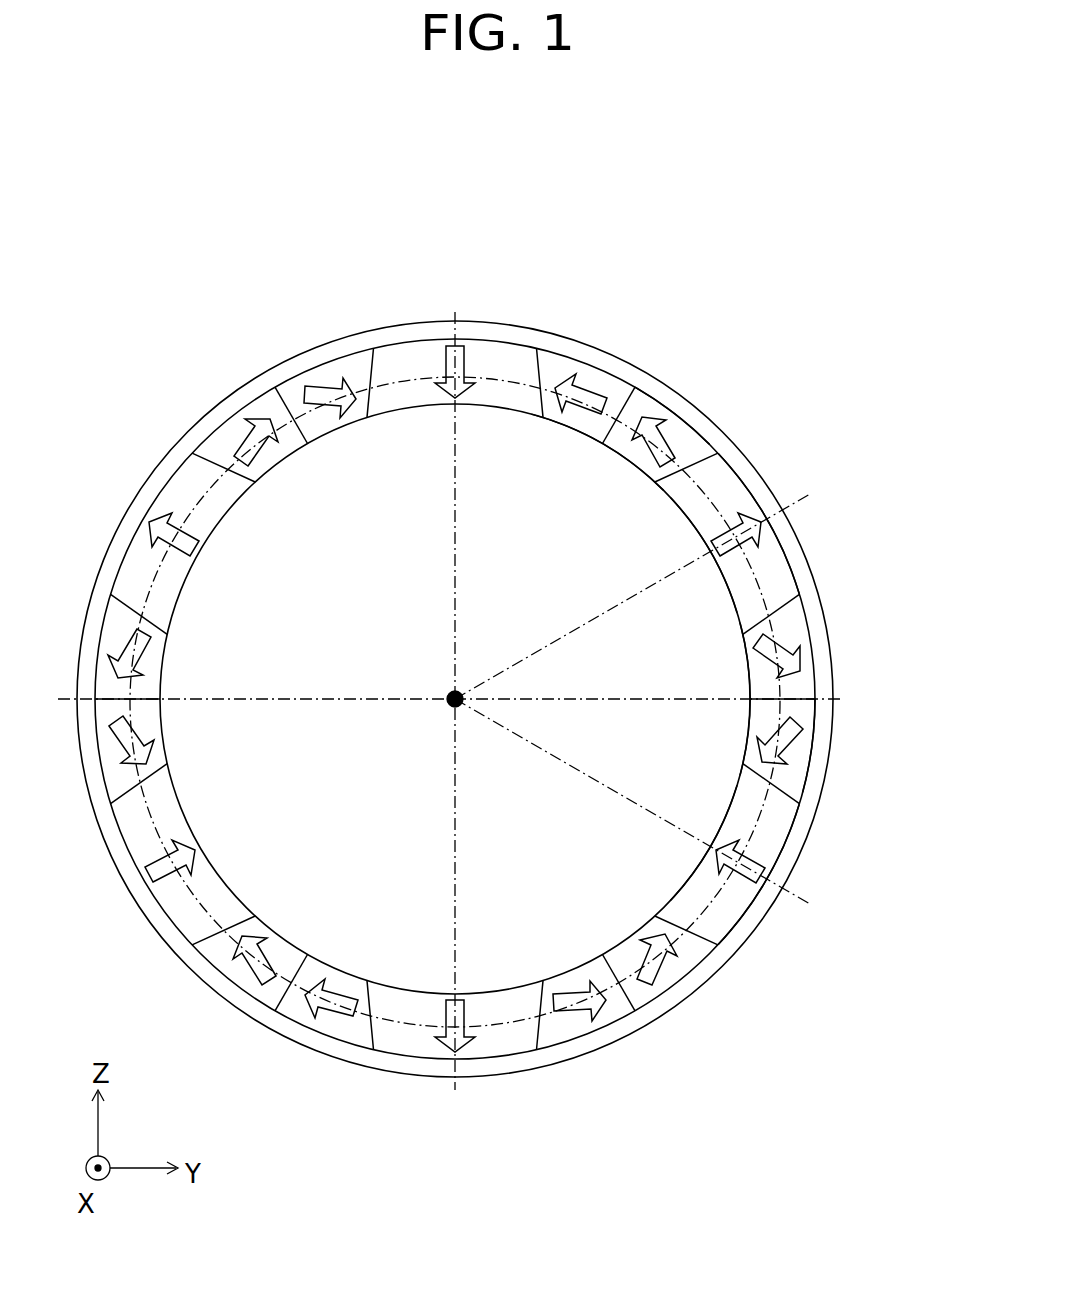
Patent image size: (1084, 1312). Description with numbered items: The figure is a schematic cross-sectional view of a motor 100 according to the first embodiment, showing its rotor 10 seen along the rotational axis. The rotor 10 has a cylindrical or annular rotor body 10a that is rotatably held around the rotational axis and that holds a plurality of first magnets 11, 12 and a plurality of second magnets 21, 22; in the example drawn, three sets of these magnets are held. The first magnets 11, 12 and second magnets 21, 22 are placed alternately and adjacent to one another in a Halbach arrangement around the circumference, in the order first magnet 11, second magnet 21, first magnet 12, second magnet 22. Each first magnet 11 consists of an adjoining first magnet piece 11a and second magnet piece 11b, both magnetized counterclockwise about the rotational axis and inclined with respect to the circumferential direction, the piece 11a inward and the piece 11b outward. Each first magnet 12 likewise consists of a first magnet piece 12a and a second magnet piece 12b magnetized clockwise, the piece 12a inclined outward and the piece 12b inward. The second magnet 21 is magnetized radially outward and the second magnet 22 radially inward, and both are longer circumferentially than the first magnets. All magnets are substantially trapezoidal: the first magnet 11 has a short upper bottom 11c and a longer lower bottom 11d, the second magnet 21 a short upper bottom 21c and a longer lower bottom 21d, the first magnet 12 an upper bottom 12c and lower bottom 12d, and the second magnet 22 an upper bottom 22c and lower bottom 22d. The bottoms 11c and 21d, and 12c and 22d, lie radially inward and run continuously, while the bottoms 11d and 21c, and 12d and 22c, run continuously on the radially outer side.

The motor 100 is at (860, 100).
The rotor 10 is at (753, 178).
The rotor body 10a is at (803, 818).
The first magnet 11 is at (726, 322).
The first magnet piece 11a is at (615, 385).
The second magnet piece 11b is at (640, 412).
The upper bottom 11c is at (595, 440).
The lower bottom 11d is at (697, 427).
The first magnet 12 is at (938, 632).
The first magnet piece 12a is at (797, 688).
The second magnet piece 12b is at (797, 723).
The upper bottom 12c is at (750, 697).
The lower bottom 12d is at (813, 752).
The second magnet 21 is at (747, 503).
The upper bottom 21c is at (780, 540).
The lower bottom 21d is at (727, 567).
The second magnet 22 is at (512, 350).
The upper bottom 22c is at (743, 918).
The lower bottom 22d is at (677, 888).